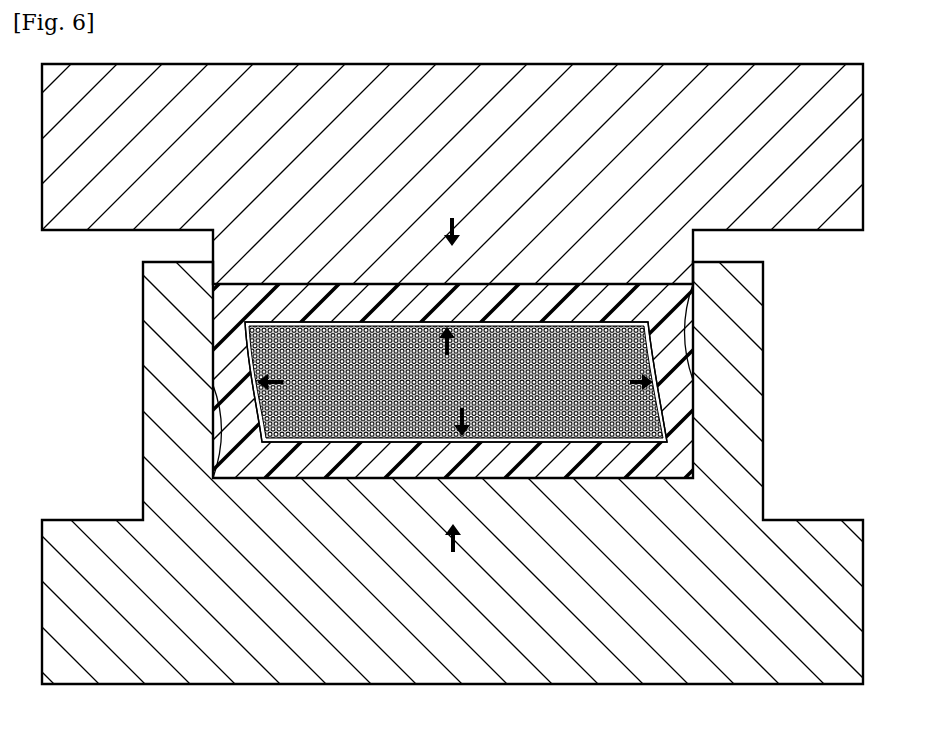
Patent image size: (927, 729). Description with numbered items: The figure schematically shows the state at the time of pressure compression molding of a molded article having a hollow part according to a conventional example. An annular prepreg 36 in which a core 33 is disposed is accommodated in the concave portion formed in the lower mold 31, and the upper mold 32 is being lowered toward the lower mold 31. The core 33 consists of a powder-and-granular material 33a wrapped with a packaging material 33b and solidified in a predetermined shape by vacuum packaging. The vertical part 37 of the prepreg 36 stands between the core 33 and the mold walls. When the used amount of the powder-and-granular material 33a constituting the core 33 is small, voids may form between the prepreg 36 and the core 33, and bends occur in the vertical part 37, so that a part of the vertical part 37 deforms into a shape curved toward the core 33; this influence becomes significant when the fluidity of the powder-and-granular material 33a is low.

The lower mold 31 is at (232, 605).
The upper mold 32 is at (232, 172).
The core 33 is at (567, 374).
The powder-and-granular material 33a is at (647, 362).
The packaging material 33b is at (643, 325).
The annular prepreg 36 is at (297, 304).
The vertical part 37 is at (682, 400).